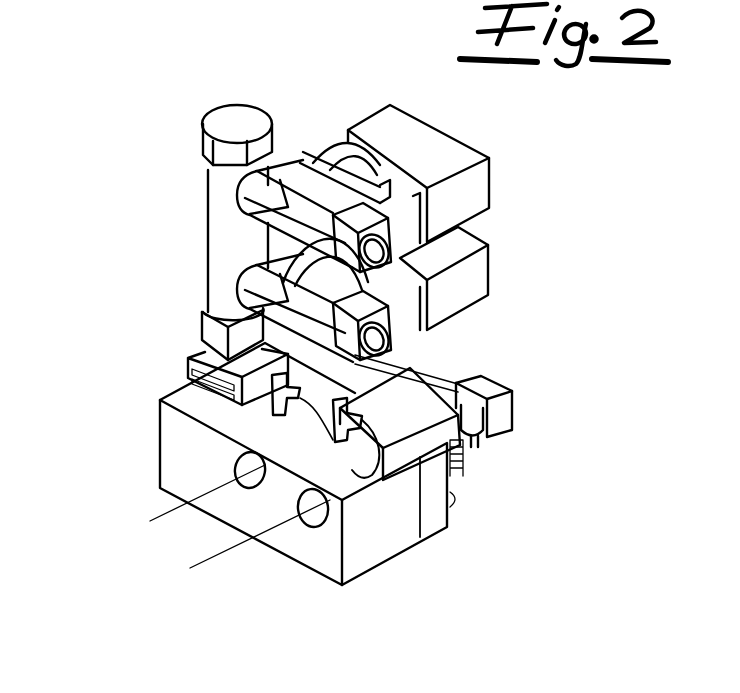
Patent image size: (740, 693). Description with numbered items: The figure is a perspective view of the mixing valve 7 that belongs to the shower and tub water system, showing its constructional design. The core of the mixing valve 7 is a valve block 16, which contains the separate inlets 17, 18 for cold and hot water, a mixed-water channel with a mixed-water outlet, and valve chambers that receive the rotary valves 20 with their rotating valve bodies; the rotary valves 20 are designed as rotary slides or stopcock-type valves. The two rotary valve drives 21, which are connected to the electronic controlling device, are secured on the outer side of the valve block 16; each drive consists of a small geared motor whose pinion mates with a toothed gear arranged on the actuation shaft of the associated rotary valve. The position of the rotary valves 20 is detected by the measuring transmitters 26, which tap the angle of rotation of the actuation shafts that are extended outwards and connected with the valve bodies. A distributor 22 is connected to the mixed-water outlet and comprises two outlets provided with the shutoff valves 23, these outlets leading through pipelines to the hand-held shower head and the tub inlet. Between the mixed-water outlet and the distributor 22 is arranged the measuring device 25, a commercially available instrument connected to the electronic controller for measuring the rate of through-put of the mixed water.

The mixing valve 7 is at (132, 125).
The valve block 16 is at (397, 514).
The inlet 17 is at (143, 521).
The inlet 18 is at (218, 557).
The rotary valves 20 is at (576, 533).
The rotary valve drives 21 is at (412, 412).
The distributor 22 is at (227, 287).
The shutoff valves 23 is at (274, 328).
The measuring device 25 is at (194, 400).
The measuring transmitters 26 is at (492, 385).